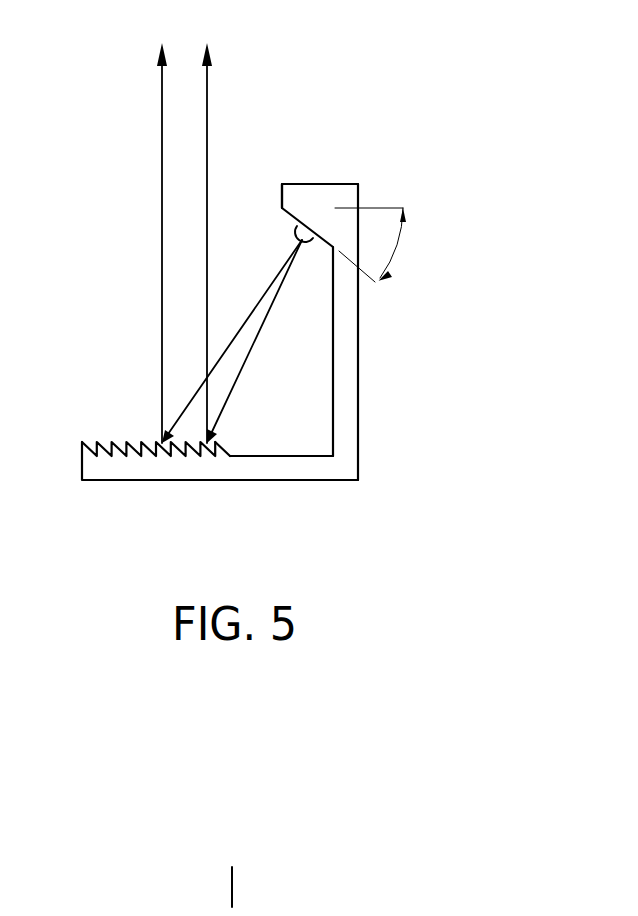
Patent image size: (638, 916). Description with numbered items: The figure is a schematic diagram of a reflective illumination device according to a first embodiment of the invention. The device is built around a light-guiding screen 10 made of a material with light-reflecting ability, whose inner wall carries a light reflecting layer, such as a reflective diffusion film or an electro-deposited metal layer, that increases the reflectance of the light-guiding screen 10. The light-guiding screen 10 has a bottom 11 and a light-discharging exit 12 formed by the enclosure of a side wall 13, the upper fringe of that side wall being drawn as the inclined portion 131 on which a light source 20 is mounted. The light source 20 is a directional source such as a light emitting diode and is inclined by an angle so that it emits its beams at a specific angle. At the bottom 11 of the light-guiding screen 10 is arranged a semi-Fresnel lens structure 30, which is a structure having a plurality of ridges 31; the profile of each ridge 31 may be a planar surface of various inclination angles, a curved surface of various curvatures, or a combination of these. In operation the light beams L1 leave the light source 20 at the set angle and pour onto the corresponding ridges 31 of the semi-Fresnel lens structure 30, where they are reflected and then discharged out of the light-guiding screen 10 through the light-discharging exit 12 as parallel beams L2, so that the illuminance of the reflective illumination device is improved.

The light-guiding screen 10 is at (274, 330).
The bottom 11 is at (287, 473).
The light-discharging exit 12 is at (237, 182).
The side wall 13 is at (358, 340).
The top flange with inclined surface 131 is at (315, 188).
The light source 20 is at (293, 233).
The semi-Fresnel lens structure 30 is at (191, 398).
The ridge 31 is at (228, 448).
The light beams L1 is at (240, 330).
The reflected light rays L2 is at (207, 100).